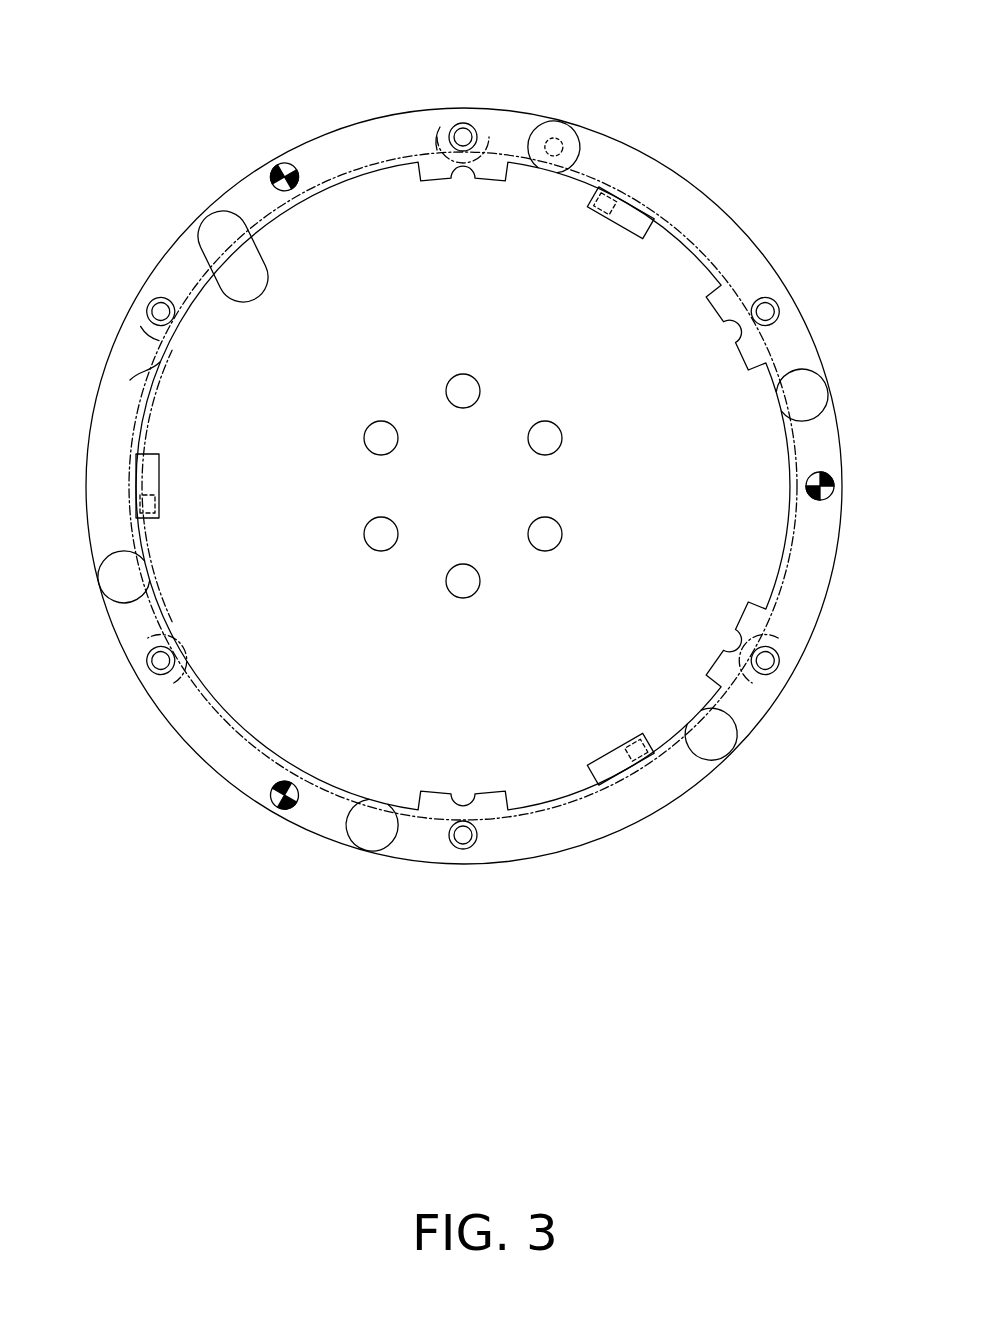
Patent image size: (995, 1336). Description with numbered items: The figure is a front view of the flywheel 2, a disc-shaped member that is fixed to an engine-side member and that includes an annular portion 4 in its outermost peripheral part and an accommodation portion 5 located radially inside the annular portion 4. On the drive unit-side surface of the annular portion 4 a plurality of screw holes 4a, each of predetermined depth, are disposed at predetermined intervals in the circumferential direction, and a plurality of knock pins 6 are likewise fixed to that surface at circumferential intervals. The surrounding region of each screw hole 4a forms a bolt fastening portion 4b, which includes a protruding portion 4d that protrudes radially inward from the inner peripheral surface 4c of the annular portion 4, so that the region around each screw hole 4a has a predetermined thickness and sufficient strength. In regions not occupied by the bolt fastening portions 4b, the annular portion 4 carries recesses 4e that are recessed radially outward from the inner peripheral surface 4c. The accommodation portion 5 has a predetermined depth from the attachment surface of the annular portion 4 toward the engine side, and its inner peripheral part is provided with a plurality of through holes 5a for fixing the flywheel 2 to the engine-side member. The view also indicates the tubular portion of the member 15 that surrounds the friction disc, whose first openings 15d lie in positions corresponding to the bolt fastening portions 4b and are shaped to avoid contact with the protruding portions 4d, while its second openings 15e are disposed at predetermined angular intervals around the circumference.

The flywheel 2 is at (727, 193).
The annular portion 4 is at (603, 150).
The screw holes 4a is at (483, 133).
The bolt fastening portions 4b is at (440, 127).
The inner peripheral surface 4c is at (130, 380).
The protruding portion 4d is at (248, 225).
The recesses 4e is at (642, 206).
The accommodation portion 5 is at (591, 434).
The through holes 5a is at (447, 392).
The knock pins 6 is at (283, 164).
The elastic ring member 15 is at (717, 240).
The first openings 15d is at (505, 150).
The second openings 15e is at (625, 185).